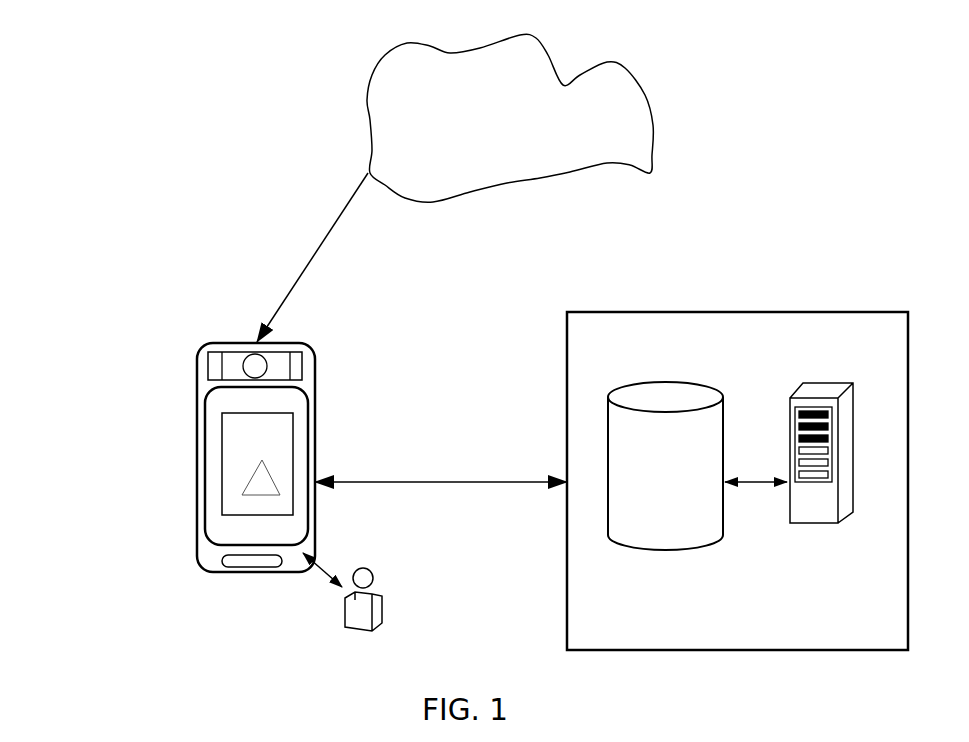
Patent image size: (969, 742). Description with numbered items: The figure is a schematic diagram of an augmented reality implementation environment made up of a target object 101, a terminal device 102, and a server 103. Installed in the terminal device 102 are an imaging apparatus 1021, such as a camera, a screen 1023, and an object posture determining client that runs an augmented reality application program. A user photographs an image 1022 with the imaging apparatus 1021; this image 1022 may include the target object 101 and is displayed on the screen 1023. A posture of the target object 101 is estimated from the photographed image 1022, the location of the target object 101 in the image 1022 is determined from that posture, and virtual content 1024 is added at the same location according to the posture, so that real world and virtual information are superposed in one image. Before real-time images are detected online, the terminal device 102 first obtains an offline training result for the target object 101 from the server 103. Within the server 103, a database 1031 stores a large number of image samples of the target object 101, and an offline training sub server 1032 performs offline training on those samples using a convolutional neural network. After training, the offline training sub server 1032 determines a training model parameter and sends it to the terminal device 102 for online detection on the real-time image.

The target object 101 is at (510, 118).
The terminal device 102 is at (253, 572).
The imaging apparatus 1021 is at (328, 328).
The image 1022 is at (222, 452).
The screen 1023 is at (305, 433).
The virtual content 1024 is at (242, 480).
The server 103 is at (737, 481).
The database 1031 is at (665, 466).
The offline training sub server 1032 is at (843, 505).